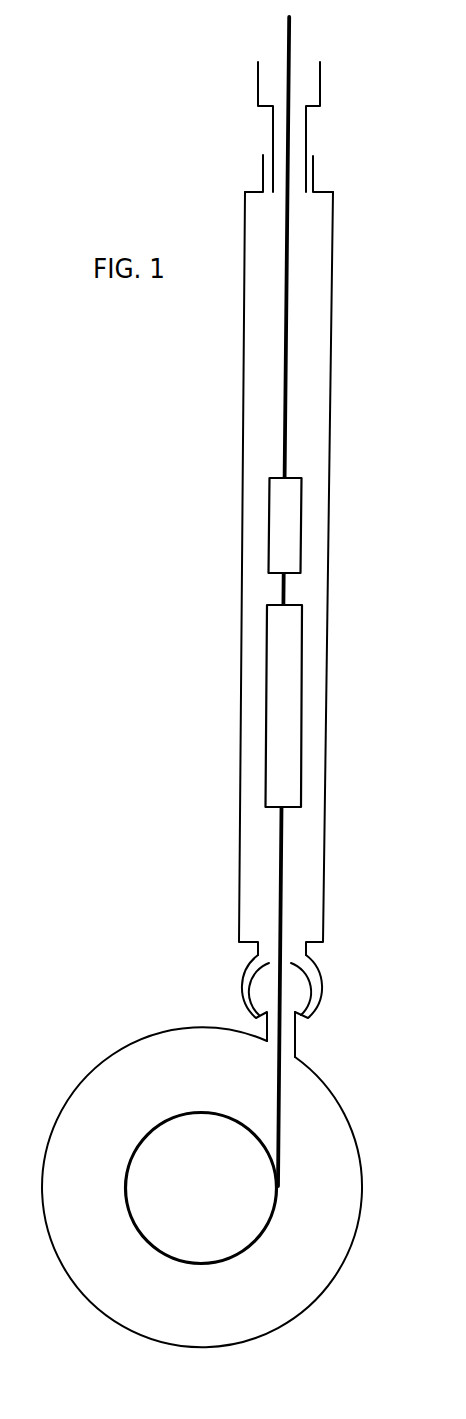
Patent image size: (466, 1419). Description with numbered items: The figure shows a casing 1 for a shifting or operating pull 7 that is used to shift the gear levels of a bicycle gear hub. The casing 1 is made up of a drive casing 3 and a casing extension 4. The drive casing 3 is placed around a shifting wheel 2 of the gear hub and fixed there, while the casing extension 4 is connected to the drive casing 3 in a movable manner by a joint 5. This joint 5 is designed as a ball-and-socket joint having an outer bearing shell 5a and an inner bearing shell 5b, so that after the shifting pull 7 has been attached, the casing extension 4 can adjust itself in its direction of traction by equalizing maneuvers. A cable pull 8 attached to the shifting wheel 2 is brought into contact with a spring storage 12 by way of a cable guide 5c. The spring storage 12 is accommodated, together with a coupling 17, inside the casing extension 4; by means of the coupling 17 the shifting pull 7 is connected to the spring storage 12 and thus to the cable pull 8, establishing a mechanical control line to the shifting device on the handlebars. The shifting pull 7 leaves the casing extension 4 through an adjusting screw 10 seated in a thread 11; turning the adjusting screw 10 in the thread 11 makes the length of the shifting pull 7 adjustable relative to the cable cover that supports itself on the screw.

The casing 1 is at (163, 1023).
The shifting wheel 2 is at (137, 1213).
The drive casing 3 is at (113, 1058).
The casing extension 4 is at (327, 552).
The joint 5 is at (332, 959).
The outer bearing shell 5a is at (322, 980).
The inner bearing shell 5b is at (250, 980).
The cable guide 5c is at (297, 1033).
The shifting pull 7 is at (285, 418).
The cable pull 8 is at (283, 848).
The adjusting screw 10 is at (258, 82).
The thread 11 is at (308, 170).
The spring storage 12 is at (270, 669).
The coupling 17 is at (278, 519).